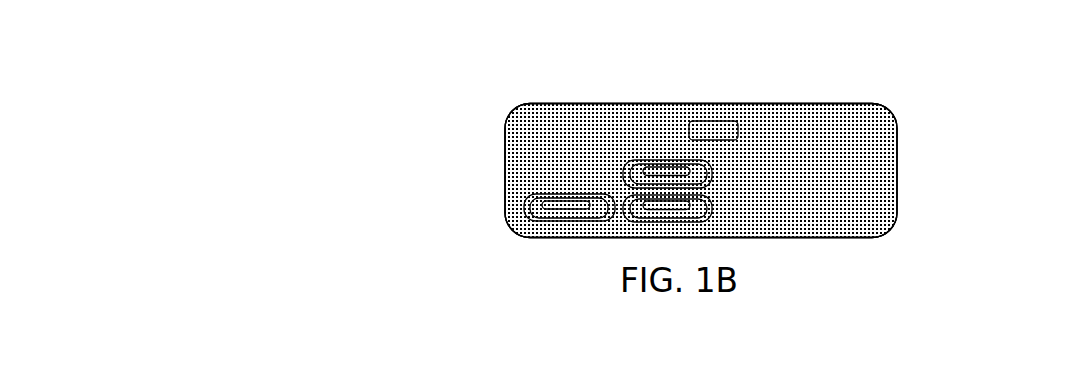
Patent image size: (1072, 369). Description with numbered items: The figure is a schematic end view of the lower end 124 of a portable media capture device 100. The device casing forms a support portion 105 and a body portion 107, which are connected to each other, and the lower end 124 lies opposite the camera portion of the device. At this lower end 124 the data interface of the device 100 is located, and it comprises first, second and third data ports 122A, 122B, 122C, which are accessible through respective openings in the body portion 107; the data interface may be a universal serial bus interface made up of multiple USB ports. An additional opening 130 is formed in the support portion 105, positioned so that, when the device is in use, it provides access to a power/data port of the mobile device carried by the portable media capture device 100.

The portable media capture device 100 is at (622, 158).
The support portion 105 is at (480, 123).
The body portion 107 is at (351, 186).
The first data port 122A is at (712, 178).
The second data port 122B is at (712, 209).
The third data port 122C is at (537, 204).
The lower end 124 is at (905, 241).
The additional opening 130 is at (739, 123).